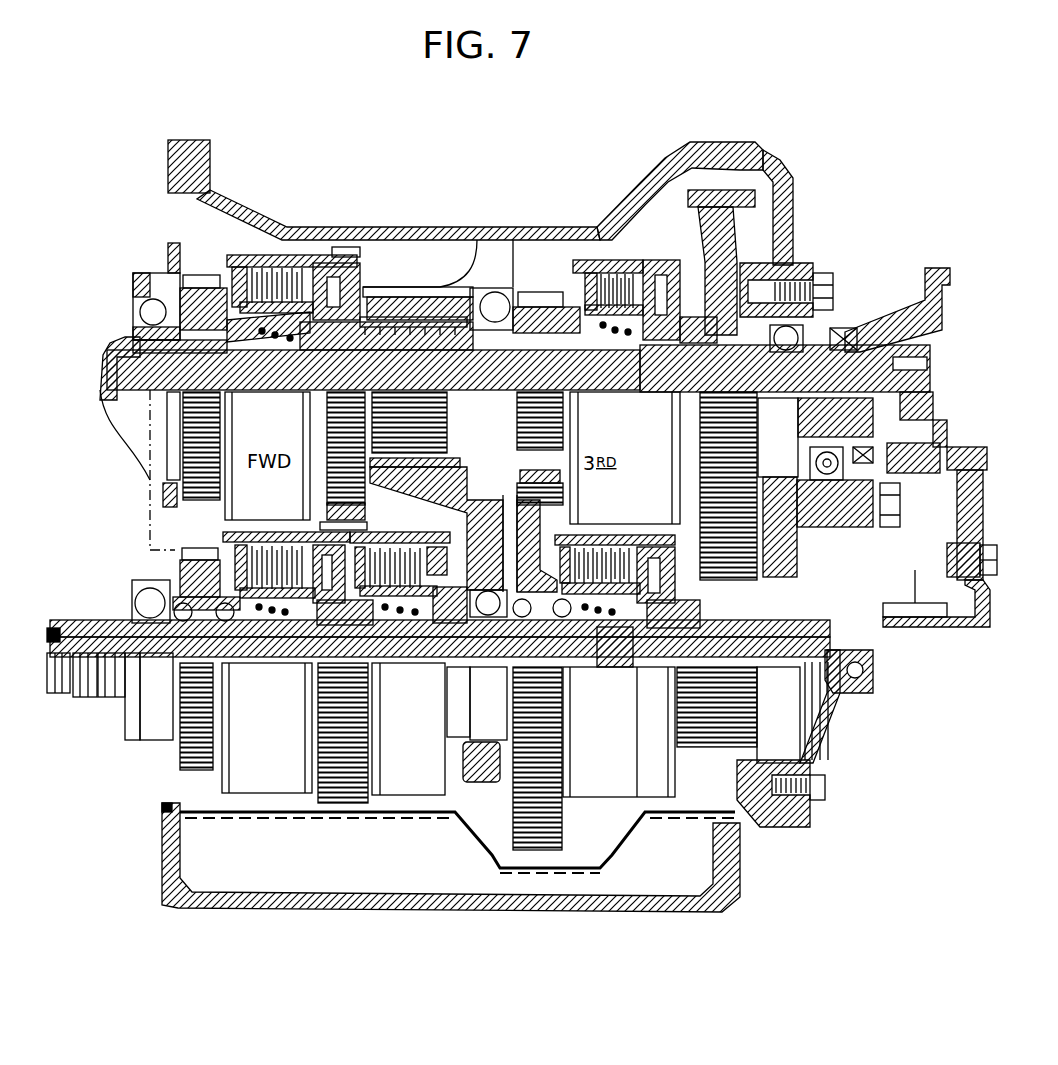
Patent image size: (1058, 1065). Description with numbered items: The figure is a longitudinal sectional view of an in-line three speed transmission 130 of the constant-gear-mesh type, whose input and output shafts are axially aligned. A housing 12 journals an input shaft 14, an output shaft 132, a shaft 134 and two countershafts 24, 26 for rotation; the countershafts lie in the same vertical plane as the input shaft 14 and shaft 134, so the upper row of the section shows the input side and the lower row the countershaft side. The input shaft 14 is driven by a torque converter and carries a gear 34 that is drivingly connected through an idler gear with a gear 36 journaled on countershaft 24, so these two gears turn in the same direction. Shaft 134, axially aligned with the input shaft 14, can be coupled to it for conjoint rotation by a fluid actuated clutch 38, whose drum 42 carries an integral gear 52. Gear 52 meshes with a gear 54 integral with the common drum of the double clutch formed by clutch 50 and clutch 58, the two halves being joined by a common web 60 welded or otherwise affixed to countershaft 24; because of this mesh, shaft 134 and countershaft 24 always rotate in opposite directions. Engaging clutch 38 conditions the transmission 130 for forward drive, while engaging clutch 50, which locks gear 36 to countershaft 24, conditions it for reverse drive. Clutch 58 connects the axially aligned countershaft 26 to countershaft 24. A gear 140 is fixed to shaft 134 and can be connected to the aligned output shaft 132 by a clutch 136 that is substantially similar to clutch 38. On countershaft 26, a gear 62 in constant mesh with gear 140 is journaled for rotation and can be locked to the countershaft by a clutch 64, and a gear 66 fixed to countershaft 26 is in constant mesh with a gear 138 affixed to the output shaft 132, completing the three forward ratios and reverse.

The housing 12 is at (203, 160).
The input shaft 14 is at (122, 337).
The countershaft 24 is at (383, 640).
The countershaft 26 is at (617, 667).
The gear 34 is at (205, 280).
The gear 36 is at (183, 570).
The clutch 38 is at (290, 245).
The drum 42 is at (247, 257).
The clutch 50 is at (260, 797).
The gear 52 is at (350, 252).
The gear 54 is at (342, 793).
The clutch 58 is at (413, 800).
The common web 60 is at (370, 533).
The gear 62 is at (547, 523).
The clutch 64 is at (597, 800).
The gear 66 is at (707, 735).
The transmission 130 is at (137, 912).
The output shaft 132 is at (740, 352).
The shaft 134 is at (187, 377).
The clutch 136 is at (597, 255).
The gear 138 is at (757, 197).
The gear 140 is at (538, 298).